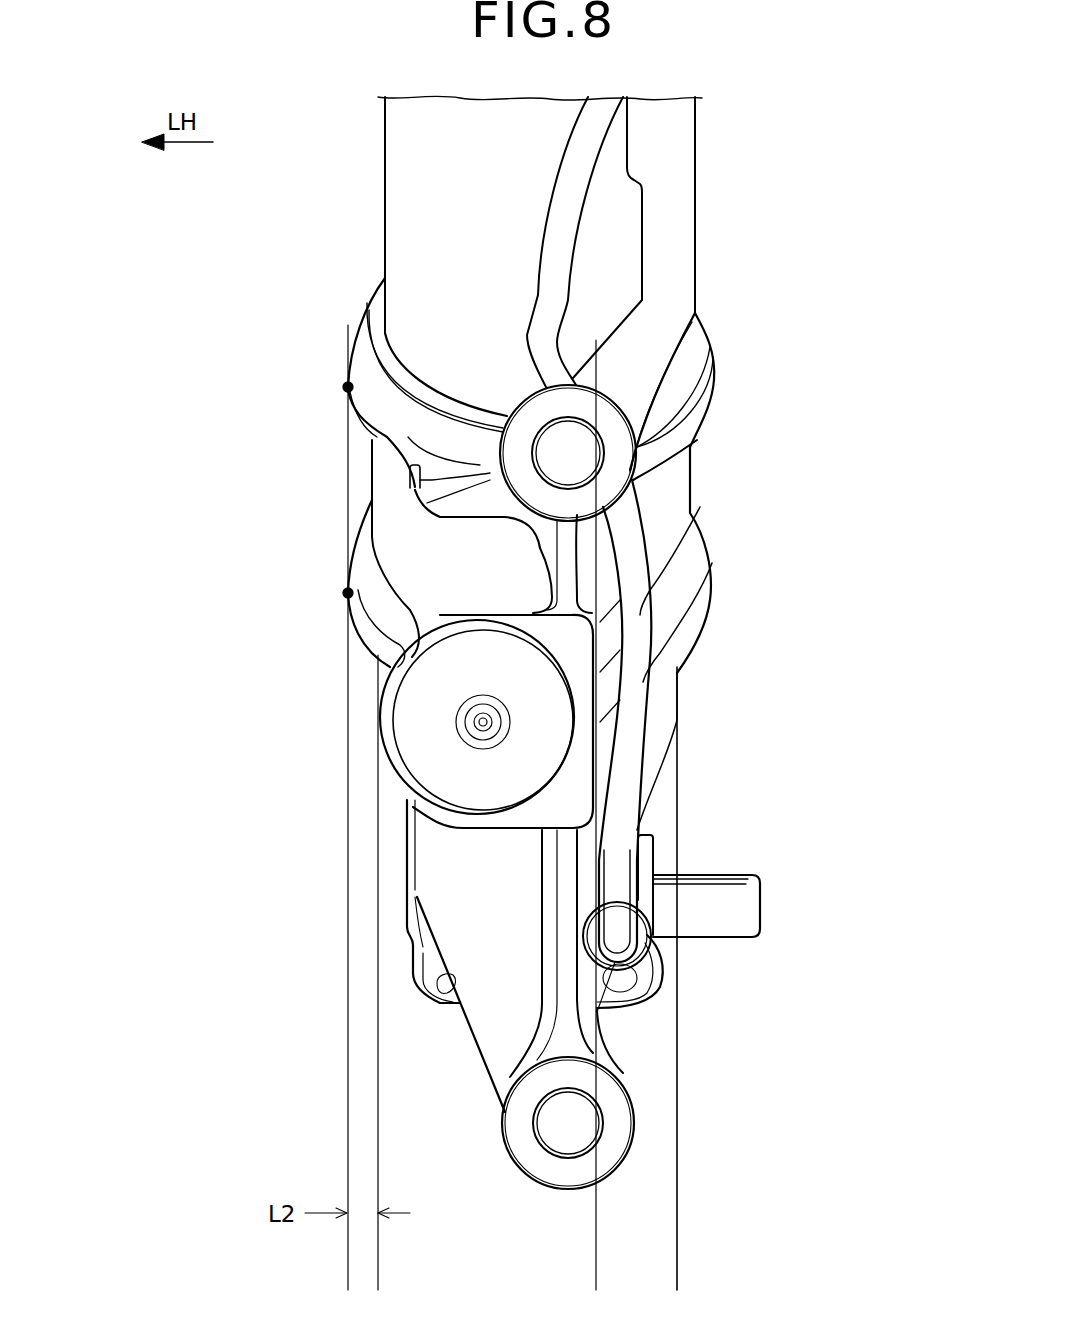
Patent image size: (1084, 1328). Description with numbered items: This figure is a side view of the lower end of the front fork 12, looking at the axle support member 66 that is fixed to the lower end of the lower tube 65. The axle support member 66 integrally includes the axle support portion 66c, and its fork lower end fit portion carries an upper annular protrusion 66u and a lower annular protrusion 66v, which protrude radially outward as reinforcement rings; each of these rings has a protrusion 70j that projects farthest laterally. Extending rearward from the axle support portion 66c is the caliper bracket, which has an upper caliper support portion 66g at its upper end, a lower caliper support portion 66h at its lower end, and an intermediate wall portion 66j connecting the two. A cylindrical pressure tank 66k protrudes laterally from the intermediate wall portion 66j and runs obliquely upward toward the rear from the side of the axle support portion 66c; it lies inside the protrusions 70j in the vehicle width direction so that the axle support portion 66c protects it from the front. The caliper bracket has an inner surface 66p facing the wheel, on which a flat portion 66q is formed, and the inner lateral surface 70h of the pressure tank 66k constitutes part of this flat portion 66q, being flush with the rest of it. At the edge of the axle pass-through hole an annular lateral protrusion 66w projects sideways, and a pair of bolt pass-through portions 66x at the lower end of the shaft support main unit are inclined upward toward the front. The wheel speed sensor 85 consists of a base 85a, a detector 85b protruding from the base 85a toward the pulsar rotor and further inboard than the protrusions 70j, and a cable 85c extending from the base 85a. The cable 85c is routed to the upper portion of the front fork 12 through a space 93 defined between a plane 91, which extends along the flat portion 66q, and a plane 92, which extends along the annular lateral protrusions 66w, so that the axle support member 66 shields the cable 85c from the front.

The front fork 12 is at (383, 162).
The lower tube 65 is at (410, 214).
The axle support member 66 is at (346, 378).
The axle support portion 66c is at (355, 336).
The protrusion 70j is at (346, 388).
The upper annular protrusion 66u is at (410, 470).
The intermediate wall portion 66j is at (536, 553).
The lower annular protrusion 66v is at (360, 606).
The pressure tank 66k is at (378, 722).
The bolt pass-through portion 66x is at (410, 963).
The lower caliper support portion 66h is at (515, 1133).
The upper caliper support portion 66g is at (606, 433).
The inner surface 66p is at (592, 558).
The flat portion 66q is at (700, 590).
The annular lateral protrusion 66w is at (680, 706).
The inner lateral surface 70h is at (648, 797).
The wheel speed sensor 85 is at (762, 898).
The base 85a is at (652, 858).
The detector 85b is at (718, 925).
The cable 85c is at (632, 640).
The space 93 is at (640, 1018).
The plane 91 is at (596, 1222).
The plane 92 is at (680, 1222).